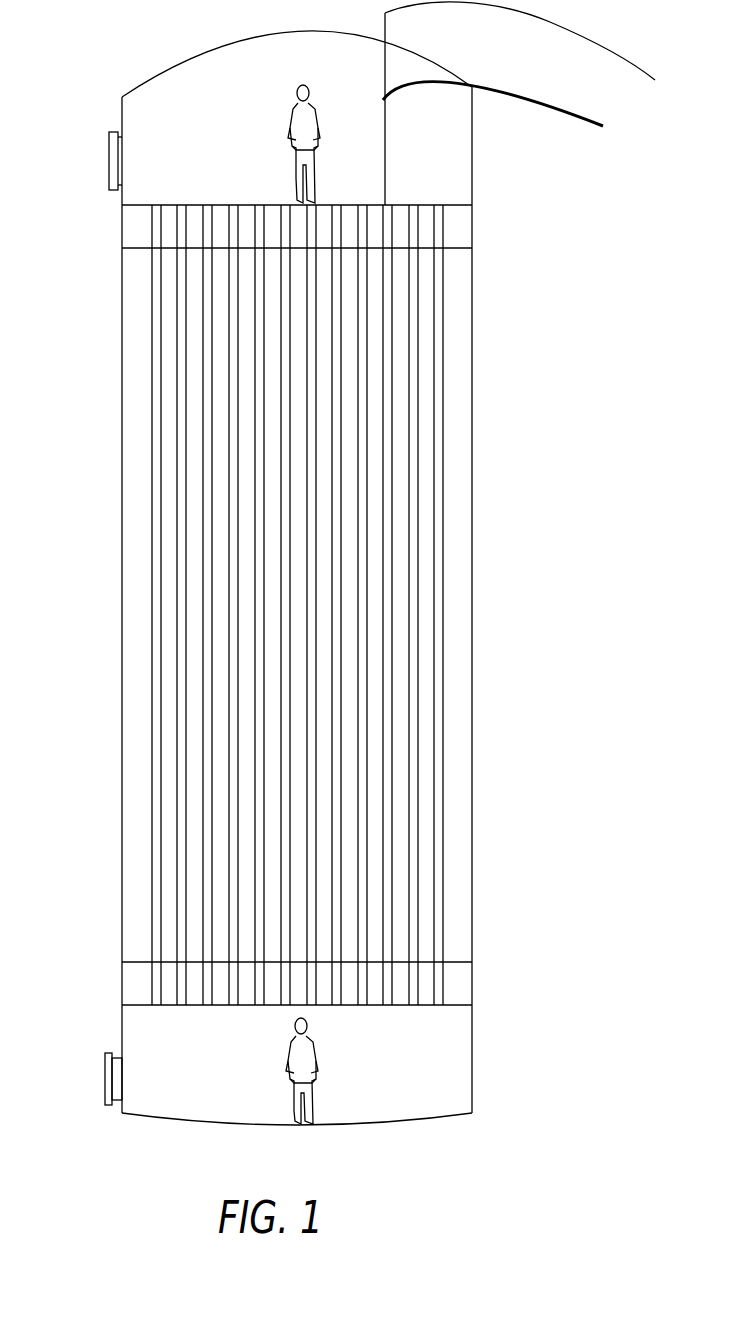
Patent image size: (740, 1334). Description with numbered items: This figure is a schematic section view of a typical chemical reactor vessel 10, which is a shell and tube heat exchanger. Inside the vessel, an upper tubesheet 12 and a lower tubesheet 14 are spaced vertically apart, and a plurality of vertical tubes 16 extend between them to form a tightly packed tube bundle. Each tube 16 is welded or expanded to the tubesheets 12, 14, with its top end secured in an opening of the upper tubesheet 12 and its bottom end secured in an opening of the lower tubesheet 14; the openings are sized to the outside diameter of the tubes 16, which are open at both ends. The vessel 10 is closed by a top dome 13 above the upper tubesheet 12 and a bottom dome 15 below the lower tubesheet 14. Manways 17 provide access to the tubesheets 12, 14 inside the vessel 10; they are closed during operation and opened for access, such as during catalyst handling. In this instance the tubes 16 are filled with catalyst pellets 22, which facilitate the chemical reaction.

The chemical reactor vessel 10 is at (545, 354).
The upper tubesheet 12 is at (472, 222).
The top dome 13 is at (163, 65).
The lower tubesheet 14 is at (470, 982).
The bottom dome 15 is at (472, 1113).
The vertical tubes 16 is at (367, 548).
The manways 17 is at (110, 178).
The catalyst pellets 22 is at (513, 111).